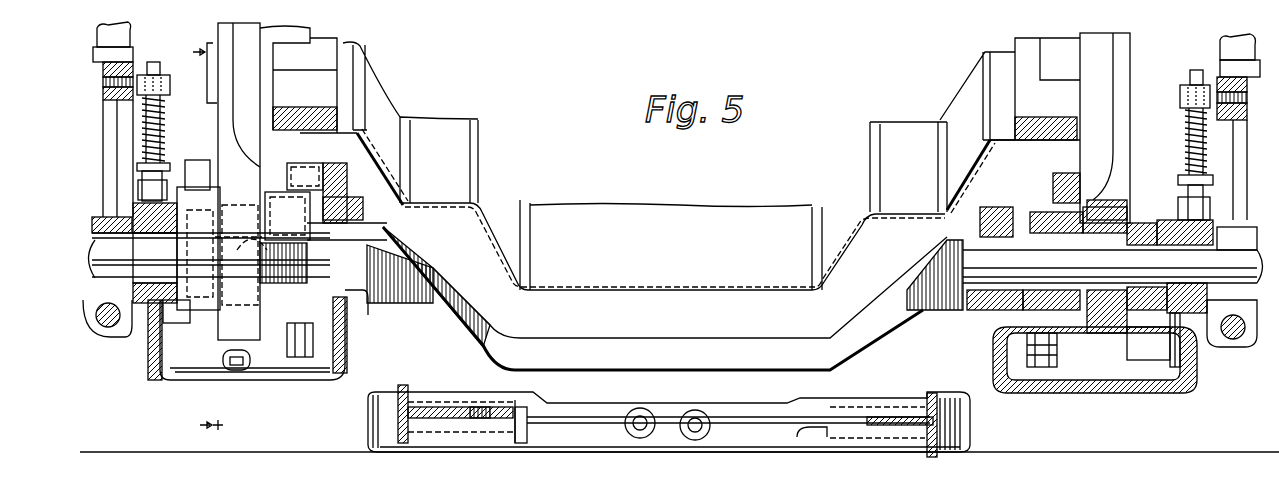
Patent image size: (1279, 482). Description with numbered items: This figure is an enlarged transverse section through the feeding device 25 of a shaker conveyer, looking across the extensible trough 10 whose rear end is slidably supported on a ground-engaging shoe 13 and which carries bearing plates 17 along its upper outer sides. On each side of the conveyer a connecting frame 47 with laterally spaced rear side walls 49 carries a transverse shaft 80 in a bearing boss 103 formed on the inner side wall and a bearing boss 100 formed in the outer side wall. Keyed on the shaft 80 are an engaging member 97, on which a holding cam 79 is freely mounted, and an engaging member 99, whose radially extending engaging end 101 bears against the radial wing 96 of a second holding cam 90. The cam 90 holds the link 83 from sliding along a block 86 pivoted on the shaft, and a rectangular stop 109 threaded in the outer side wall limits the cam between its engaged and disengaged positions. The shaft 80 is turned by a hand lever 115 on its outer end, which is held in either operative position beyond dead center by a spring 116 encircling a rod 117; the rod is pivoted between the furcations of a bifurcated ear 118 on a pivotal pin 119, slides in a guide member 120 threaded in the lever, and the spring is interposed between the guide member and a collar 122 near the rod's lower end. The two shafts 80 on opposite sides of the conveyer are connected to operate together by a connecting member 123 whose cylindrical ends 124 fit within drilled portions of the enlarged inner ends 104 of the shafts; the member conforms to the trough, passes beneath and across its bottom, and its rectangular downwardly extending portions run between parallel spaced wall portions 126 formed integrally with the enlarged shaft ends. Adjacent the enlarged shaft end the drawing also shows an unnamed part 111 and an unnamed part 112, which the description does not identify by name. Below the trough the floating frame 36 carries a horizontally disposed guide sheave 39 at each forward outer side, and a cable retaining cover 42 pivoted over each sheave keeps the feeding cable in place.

The extensible trough 10 is at (602, 212).
The ground-engaging shoe 13 is at (198, 238).
The bearing plate 17 is at (318, 75).
The feeding device 25 is at (170, 383).
The floating frame 36 is at (368, 418).
The guide sheave 39 is at (372, 432).
The cable retaining cover 42 is at (402, 388).
The connecting frame 47 is at (327, 380).
The rear side wall 49 is at (147, 372).
The holding cam 79 is at (1060, 345).
The transverse shaft 80 is at (90, 330).
The link 83 is at (265, 345).
The block 86 is at (1100, 200).
The holding cam 90 is at (148, 350).
The radial wing 96 is at (207, 160).
The engaging member 97 is at (1056, 200).
The engaging member 99 is at (185, 243).
The bearing boss 100 is at (1207, 335).
The engaging end 101 is at (207, 197).
The bearing boss 103 is at (362, 318).
The enlarged inner end 104 is at (333, 195).
The rectangular stop 109 is at (1165, 380).
The shaft 111 is at (320, 236).
The bearing cup 112 is at (298, 165).
The hand lever 115 is at (133, 35).
The spring 116 is at (160, 130).
The rod 117 is at (165, 58).
The bifurcated ear 118 is at (147, 185).
The pivotal pin 119 is at (125, 200).
The guide member 120 is at (162, 100).
The collar 122 is at (137, 163).
The connecting member 123 is at (645, 372).
The cylindrical end 124 is at (975, 210).
The wall portion 126 is at (428, 258).